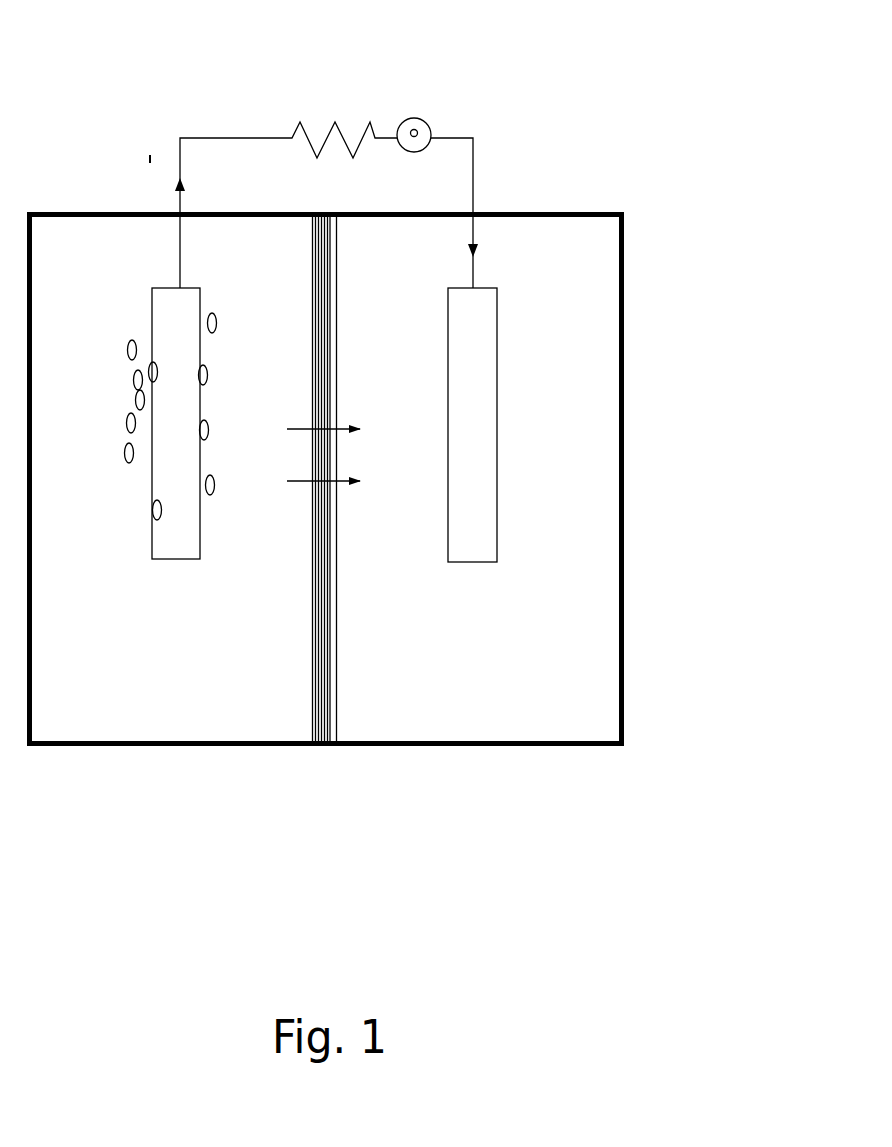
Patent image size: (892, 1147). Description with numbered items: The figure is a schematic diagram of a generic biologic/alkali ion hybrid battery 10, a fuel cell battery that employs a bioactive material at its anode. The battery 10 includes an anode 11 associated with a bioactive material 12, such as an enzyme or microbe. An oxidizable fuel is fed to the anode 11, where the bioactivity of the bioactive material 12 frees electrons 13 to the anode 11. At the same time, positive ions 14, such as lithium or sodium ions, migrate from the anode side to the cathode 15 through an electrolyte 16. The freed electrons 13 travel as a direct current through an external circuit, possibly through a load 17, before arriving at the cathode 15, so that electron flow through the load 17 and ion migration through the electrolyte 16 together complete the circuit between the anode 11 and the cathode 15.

The biologic/alkali ion hybrid battery 10 is at (565, 167).
The anode 11 is at (155, 563).
The bioactive material 12 is at (122, 353).
The electrons 13 is at (142, 152).
The positive ions 14 is at (292, 450).
The cathode 15 is at (503, 483).
The electrolyte 16 is at (497, 672).
The load 17 is at (413, 110).